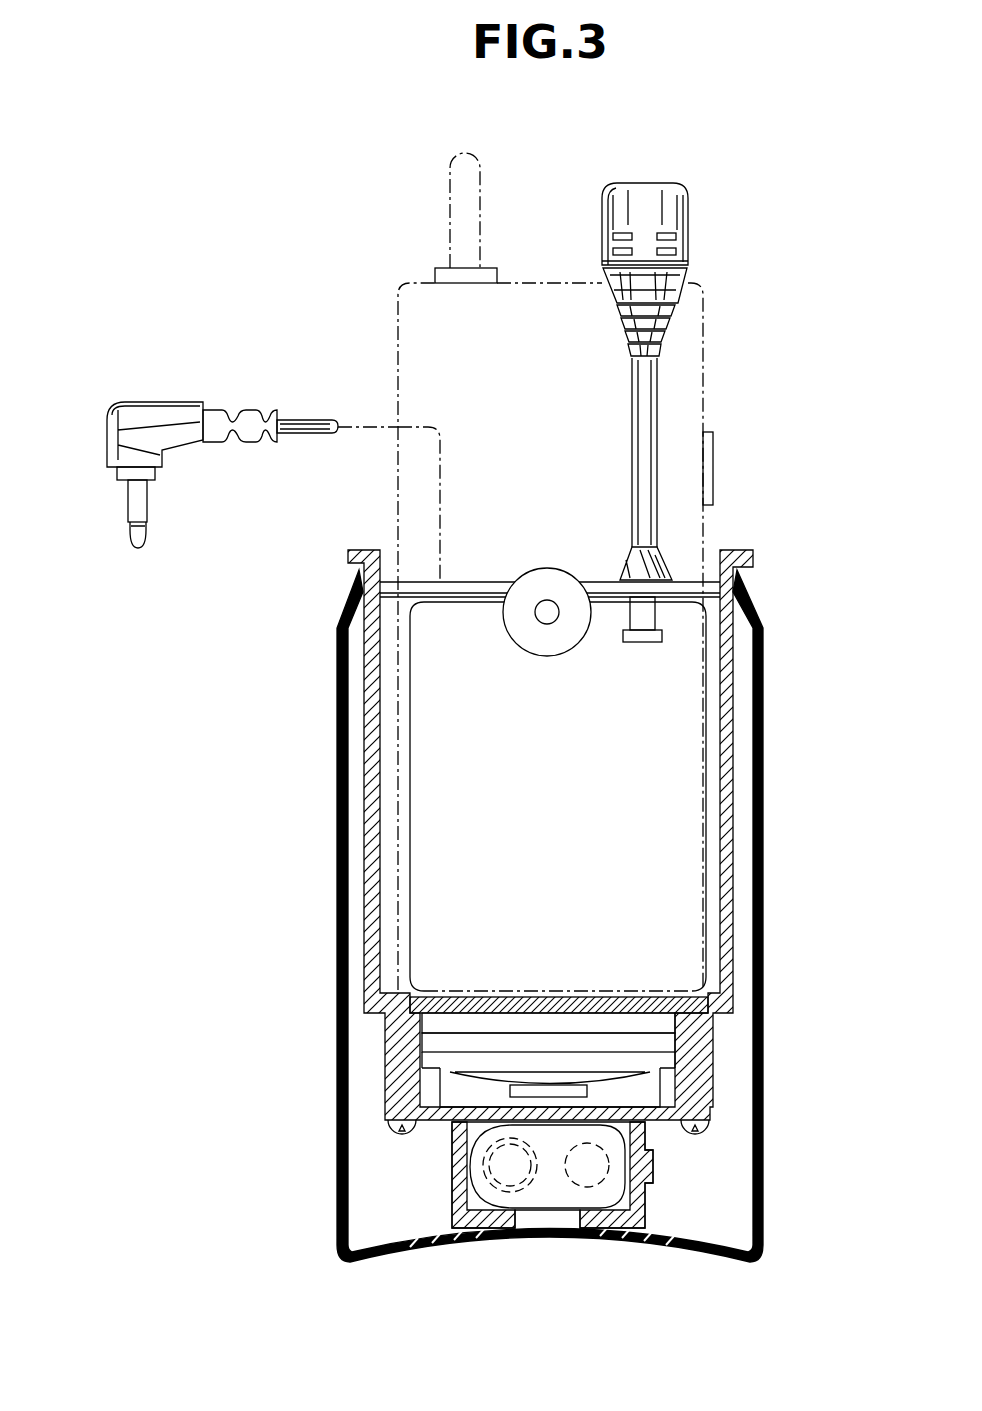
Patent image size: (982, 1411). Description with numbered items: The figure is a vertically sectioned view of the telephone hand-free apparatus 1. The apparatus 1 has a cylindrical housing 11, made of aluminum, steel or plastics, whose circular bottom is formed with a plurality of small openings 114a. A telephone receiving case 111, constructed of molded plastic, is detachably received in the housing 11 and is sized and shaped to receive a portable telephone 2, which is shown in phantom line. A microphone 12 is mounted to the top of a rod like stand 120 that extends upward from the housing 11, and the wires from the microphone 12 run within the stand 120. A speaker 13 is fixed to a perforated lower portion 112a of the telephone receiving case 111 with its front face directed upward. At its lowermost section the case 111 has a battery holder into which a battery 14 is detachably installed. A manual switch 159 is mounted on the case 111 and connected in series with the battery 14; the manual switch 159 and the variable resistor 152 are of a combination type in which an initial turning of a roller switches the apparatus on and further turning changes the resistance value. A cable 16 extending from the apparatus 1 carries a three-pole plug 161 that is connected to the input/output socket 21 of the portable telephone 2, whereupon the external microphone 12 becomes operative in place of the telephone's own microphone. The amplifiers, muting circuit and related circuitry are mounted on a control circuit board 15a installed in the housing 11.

The telephone hand-free apparatus 1 is at (777, 455).
The portable telephone 2 is at (406, 285).
The cylindrical housing 11 is at (765, 893).
The microphone 12 is at (678, 218).
The speaker 13 is at (436, 1060).
The battery 14 is at (548, 1195).
The control circuit board 15a is at (410, 845).
The cable 16 is at (305, 440).
The input/output socket 21 is at (713, 489).
The telephone receiving case 111 is at (722, 664).
The perforated lower portion 112a is at (480, 1036).
The small openings 114a is at (420, 1250).
The rod like stand 120 is at (658, 380).
The variable resistor 152 is at (548, 585).
The manual switch 159 is at (573, 559).
The 3P-plug 161 is at (178, 413).